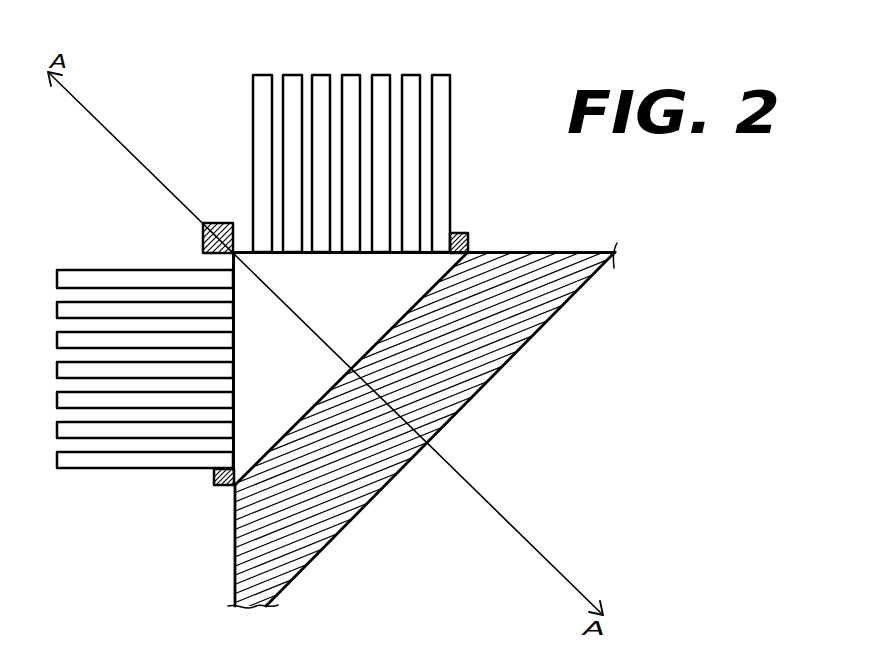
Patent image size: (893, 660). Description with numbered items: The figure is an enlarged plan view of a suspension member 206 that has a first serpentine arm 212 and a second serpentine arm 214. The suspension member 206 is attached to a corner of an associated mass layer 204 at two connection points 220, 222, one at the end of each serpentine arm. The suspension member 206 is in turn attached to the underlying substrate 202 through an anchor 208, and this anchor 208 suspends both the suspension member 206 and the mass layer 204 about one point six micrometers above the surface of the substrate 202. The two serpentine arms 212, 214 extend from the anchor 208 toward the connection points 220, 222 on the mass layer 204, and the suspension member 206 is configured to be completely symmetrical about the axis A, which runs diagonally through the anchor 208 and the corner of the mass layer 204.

The substrate 202 is at (145, 380).
The mass layer 204 is at (507, 347).
The suspension member 206 is at (346, 158).
The anchor 208 is at (213, 222).
The first serpentine arm 212 is at (452, 152).
The second serpentine arm 214 is at (118, 471).
The connection point 220 is at (213, 486).
The connection point 222 is at (468, 233).